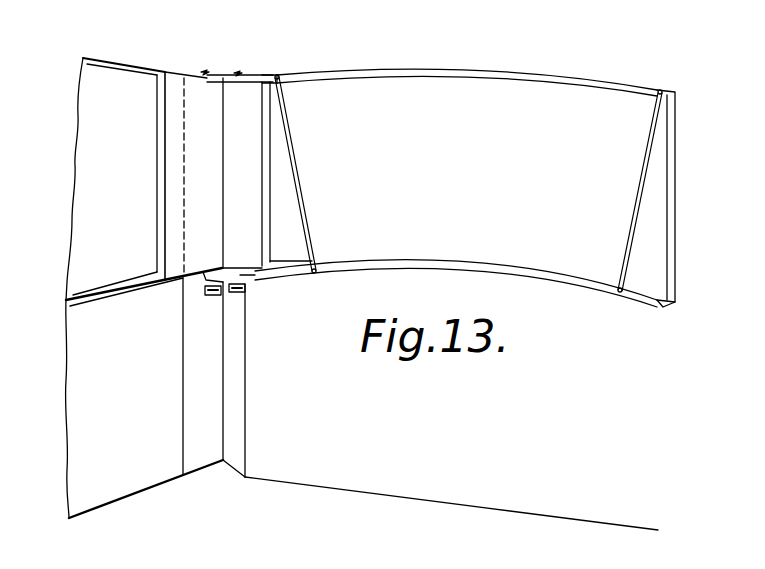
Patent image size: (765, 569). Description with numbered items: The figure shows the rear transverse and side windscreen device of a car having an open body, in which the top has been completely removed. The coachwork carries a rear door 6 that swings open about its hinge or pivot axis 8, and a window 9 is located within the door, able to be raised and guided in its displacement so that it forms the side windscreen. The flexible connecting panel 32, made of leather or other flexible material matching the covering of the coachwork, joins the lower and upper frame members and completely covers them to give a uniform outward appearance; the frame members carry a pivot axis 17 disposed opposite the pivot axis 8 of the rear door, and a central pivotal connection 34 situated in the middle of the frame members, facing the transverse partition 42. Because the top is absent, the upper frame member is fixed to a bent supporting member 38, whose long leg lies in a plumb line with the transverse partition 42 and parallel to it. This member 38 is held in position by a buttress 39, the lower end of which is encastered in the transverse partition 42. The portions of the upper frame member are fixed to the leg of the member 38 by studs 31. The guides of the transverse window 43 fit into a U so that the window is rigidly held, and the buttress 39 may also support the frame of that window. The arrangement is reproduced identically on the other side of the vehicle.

The rear door 6 is at (97, 398).
The pivot axis 8 is at (182, 372).
The window 9 is at (123, 88).
The pivot axis 17 is at (183, 240).
The studs 31 is at (207, 71).
The flexible panel 32 is at (243, 183).
The central pivot axis 34 is at (222, 127).
The bent supporting member 38 is at (262, 77).
The buttress 39 is at (300, 172).
The transverse partition 42 is at (380, 462).
The transverse window 43 is at (545, 90).